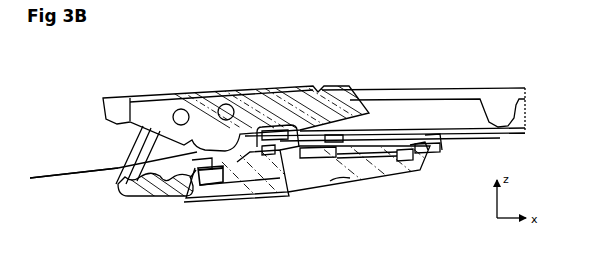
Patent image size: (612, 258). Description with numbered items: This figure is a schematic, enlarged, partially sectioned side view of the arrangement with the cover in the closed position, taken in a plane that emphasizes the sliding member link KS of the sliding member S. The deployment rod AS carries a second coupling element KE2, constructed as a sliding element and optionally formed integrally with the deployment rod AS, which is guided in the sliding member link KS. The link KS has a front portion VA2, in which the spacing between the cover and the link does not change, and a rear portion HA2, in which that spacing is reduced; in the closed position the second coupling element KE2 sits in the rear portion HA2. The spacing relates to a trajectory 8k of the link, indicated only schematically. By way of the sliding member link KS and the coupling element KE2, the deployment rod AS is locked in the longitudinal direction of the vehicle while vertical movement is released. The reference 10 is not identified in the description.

The seat adjustment assembly 10 is at (482, 46).
The deployment rod AS is at (448, 107).
The trajectory 8k is at (55, 178).
The front portion VA2 is at (222, 170).
The sliding member link KS is at (243, 160).
The second coupling element KE2 is at (282, 157).
The rear portion HA2 is at (286, 155).
The sliding member S is at (336, 180).